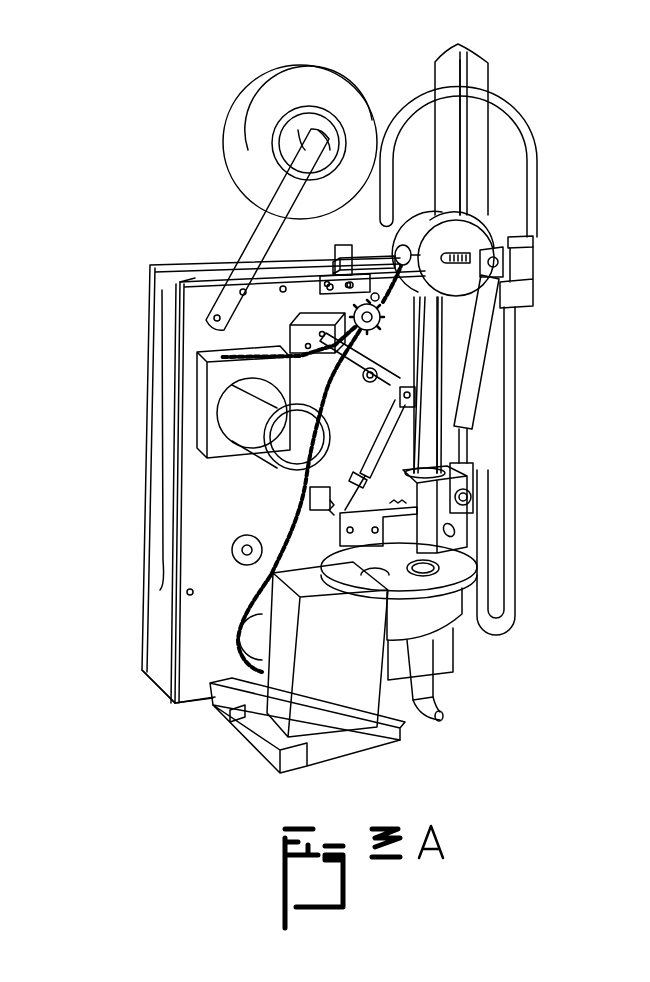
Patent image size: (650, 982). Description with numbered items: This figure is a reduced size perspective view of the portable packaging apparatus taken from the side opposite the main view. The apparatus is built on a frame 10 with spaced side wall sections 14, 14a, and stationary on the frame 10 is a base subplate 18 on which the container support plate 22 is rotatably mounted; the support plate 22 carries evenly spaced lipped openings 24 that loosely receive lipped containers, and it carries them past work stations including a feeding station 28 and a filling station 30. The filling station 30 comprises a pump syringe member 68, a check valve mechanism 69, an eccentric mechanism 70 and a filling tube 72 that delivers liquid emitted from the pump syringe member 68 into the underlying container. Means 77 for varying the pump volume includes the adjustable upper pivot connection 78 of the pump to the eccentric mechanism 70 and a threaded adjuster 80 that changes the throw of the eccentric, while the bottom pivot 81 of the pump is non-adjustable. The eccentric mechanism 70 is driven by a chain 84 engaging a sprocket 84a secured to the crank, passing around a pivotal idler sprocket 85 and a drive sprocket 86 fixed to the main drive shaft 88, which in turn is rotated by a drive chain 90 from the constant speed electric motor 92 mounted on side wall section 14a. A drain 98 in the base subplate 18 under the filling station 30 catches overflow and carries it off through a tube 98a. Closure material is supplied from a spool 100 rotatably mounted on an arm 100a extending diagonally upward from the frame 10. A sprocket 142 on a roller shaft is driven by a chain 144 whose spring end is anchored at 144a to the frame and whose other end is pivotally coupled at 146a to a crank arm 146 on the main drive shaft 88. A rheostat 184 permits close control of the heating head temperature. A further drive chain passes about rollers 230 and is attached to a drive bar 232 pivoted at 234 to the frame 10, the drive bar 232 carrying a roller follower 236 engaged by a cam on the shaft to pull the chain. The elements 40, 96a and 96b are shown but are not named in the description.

The frame 10 is at (205, 300).
The side wall section 14 is at (145, 580).
The side wall section 14a is at (238, 318).
The base subplate 18 is at (446, 602).
The container support plate 22 is at (460, 553).
The lipped openings 24 is at (428, 572).
The feeding station 28 is at (432, 456).
The filling station 30 is at (545, 141).
The feed tube 40 is at (458, 46).
The pump syringe member 68 is at (503, 336).
The check valve mechanism 69 is at (534, 298).
The eccentric mechanism 70 is at (500, 226).
The filling tube 72 is at (513, 120).
The means for varying liquid volume 77 is at (492, 230).
The upper pivot connection 78 is at (533, 242).
The threaded adjuster 80 is at (458, 243).
The bottom pivot 81 is at (474, 490).
The chain 84 is at (407, 333).
The sprocket 84a is at (440, 160).
The pivotal idler sprocket 85 is at (383, 278).
The drive sprocket 86 is at (394, 308).
The main drive shaft 88 is at (369, 421).
The drive chain 90 is at (353, 322).
The constant speed electric motor 92 is at (226, 432).
The guide plate 96a is at (352, 250).
The guide bracket 96b is at (340, 250).
The drain 98 is at (447, 648).
The tube 98a is at (432, 702).
The spool 100 is at (307, 128).
The arm 100a is at (258, 242).
The sprocket 142 is at (293, 538).
The chain 144 is at (330, 555).
The anchor 144a is at (337, 516).
The crank arm 146 is at (298, 478).
The pivotal coupling 146a is at (300, 462).
The rheostat 184 is at (320, 720).
The rollers 230 is at (413, 397).
The drive bar 232 is at (262, 357).
The pivot 234 is at (292, 333).
The roller follower 236 is at (240, 390).